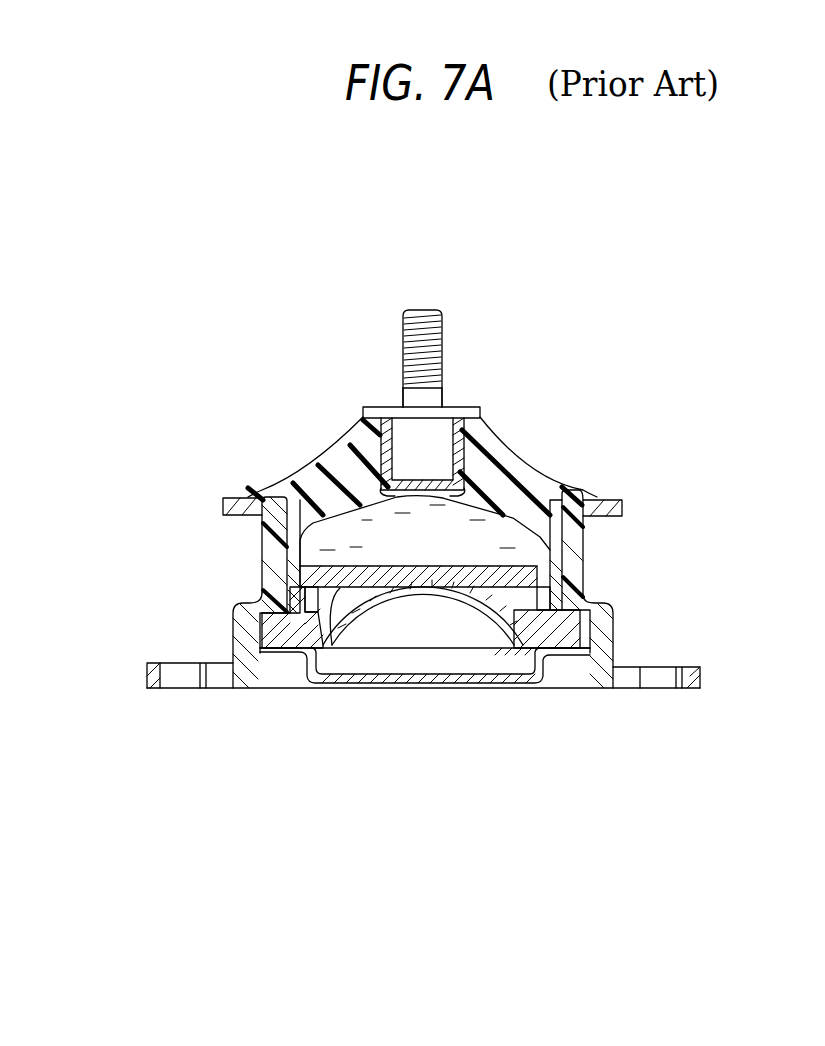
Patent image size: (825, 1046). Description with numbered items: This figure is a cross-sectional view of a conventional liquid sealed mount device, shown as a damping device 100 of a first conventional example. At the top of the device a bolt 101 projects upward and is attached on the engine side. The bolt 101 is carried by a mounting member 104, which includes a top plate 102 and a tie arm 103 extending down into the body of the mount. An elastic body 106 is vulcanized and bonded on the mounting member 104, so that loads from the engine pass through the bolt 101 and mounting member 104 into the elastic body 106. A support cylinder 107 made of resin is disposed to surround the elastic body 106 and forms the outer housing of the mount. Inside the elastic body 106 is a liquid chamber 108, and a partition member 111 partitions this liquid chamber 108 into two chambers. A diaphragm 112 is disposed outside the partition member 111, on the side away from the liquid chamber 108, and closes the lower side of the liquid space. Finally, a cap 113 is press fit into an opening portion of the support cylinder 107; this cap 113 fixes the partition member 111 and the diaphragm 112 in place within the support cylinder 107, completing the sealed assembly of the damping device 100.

The damping device 100 is at (228, 308).
The bolt 101 is at (402, 333).
The top plate 102 is at (378, 407).
The tie arm 103 is at (475, 437).
The mounting member 104 is at (451, 386).
The elastic body 106 is at (528, 470).
The support cylinder 107 is at (262, 535).
The liquid chamber 108 is at (349, 526).
The partition member 111 is at (512, 562).
The diaphragm 112 is at (487, 625).
The cap 113 is at (368, 685).